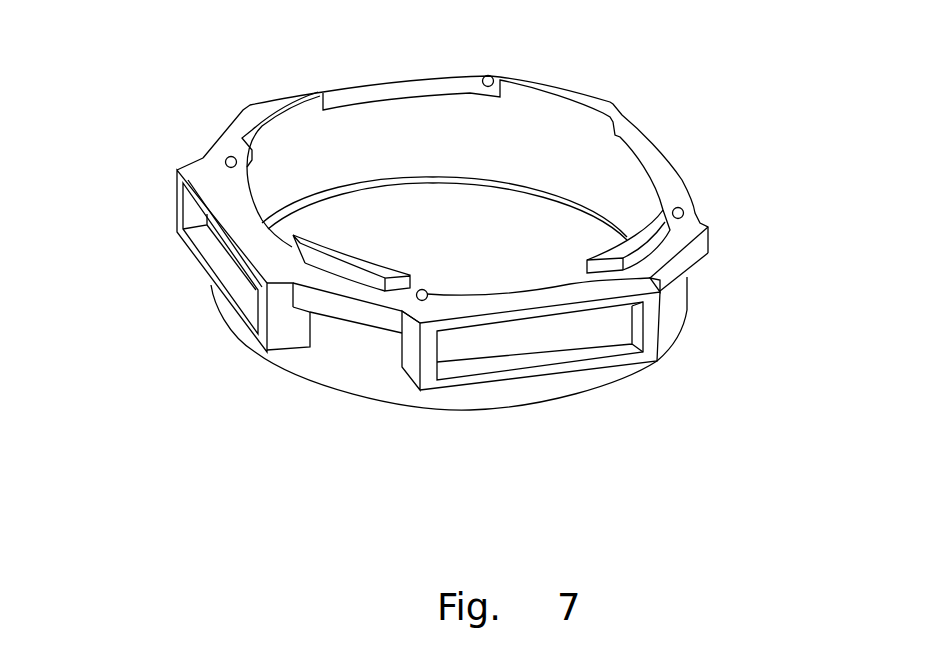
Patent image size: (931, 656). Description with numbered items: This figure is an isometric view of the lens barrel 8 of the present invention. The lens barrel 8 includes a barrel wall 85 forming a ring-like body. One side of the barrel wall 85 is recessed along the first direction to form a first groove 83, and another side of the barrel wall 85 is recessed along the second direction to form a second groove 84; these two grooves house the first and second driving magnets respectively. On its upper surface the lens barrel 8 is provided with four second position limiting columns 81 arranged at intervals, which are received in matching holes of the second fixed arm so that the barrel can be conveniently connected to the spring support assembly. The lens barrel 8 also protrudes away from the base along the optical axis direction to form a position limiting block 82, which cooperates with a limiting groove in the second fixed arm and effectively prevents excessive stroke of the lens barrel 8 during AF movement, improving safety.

The lens barrel 8 is at (470, 44).
The second position limiting column 81 is at (683, 209).
The position limiting block 82 is at (650, 231).
The first groove 83 is at (210, 257).
The second groove 84 is at (518, 352).
The barrel wall 85 is at (226, 146).